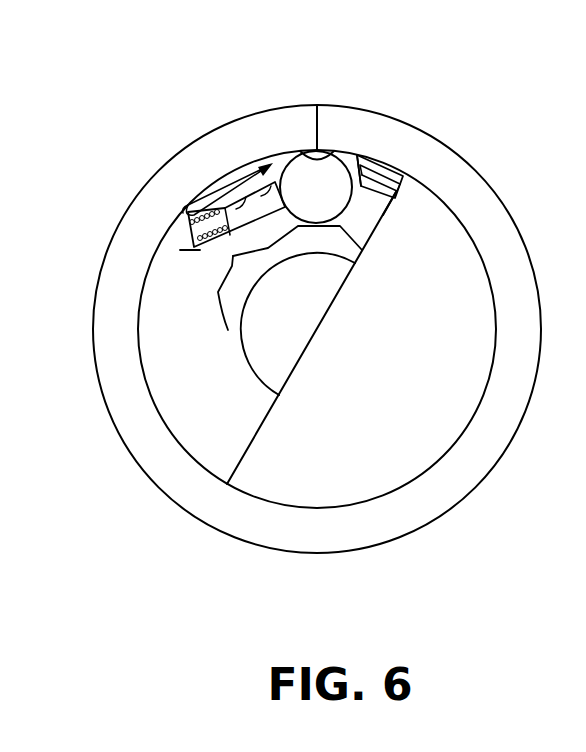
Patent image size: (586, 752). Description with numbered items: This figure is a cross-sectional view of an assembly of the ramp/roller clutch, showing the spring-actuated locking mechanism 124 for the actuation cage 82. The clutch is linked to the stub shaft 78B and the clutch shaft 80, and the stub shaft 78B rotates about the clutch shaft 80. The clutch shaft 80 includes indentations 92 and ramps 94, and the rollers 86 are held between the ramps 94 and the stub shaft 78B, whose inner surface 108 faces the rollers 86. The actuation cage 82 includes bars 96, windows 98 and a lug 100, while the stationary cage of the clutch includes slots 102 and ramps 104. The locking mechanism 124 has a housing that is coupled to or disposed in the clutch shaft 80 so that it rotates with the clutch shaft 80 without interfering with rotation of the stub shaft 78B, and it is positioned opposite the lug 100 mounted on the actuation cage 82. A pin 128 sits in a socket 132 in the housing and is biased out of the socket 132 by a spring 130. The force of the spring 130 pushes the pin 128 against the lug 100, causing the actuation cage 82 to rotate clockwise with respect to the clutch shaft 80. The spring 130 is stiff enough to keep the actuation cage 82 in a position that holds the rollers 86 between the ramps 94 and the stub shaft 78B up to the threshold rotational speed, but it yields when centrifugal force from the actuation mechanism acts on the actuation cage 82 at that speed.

The stub shaft 78B is at (253, 132).
The clutch shaft 80 is at (262, 285).
The actuation cage 82 is at (386, 208).
The rollers 86 is at (304, 199).
The indentations 92 is at (233, 257).
The ramps 94 is at (197, 252).
The bars 96 is at (382, 170).
The windows 98 is at (357, 177).
The lug 100 is at (278, 177).
The slots 102 is at (372, 183).
The ramps 104 is at (207, 285).
The inner surface 108 is at (328, 153).
The spring-actuated locking mechanism 124 is at (182, 204).
The pin 128 is at (258, 163).
The spring 130 is at (186, 204).
The socket 132 is at (192, 228).